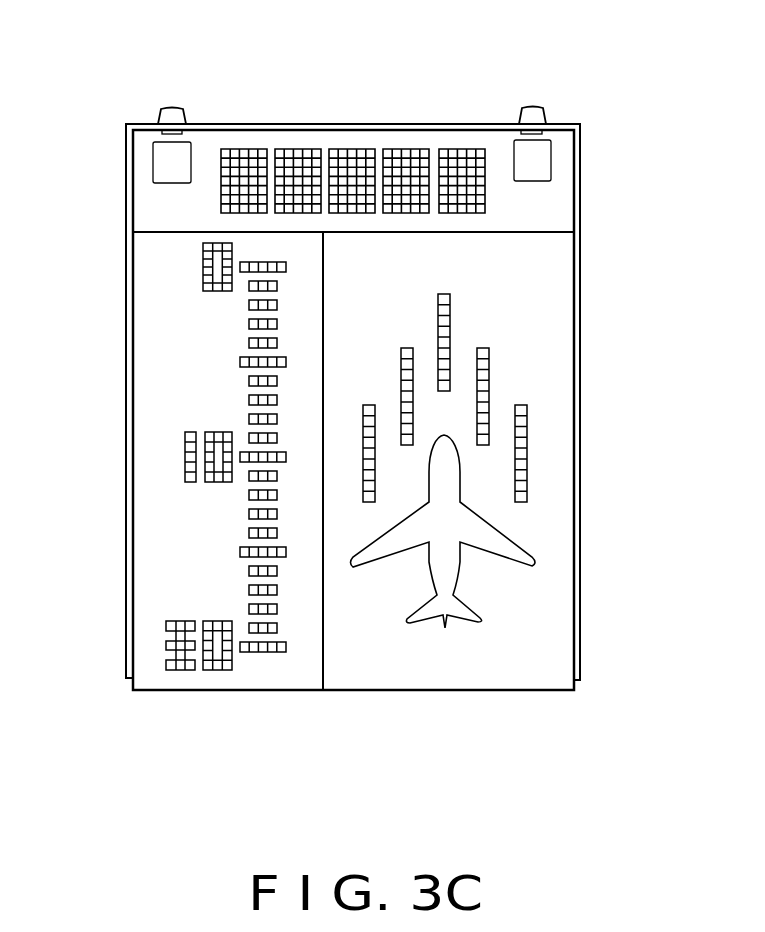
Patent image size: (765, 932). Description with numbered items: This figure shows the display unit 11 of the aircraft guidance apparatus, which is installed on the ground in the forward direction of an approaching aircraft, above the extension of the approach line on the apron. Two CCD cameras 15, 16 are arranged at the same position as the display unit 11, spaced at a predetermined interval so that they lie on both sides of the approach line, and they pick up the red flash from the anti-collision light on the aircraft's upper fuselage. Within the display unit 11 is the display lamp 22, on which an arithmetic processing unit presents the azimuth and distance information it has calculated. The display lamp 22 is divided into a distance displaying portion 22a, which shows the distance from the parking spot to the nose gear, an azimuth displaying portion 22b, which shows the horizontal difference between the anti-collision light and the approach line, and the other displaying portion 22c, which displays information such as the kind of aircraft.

The display unit 11 is at (372, 122).
The CCD camera 15 is at (153, 172).
The CCD camera 16 is at (545, 158).
The display lamp 22 is at (403, 690).
The distance displaying portion 22a is at (226, 456).
The azimuth displaying portion 22b is at (537, 318).
The other displaying portion 22c is at (462, 148).